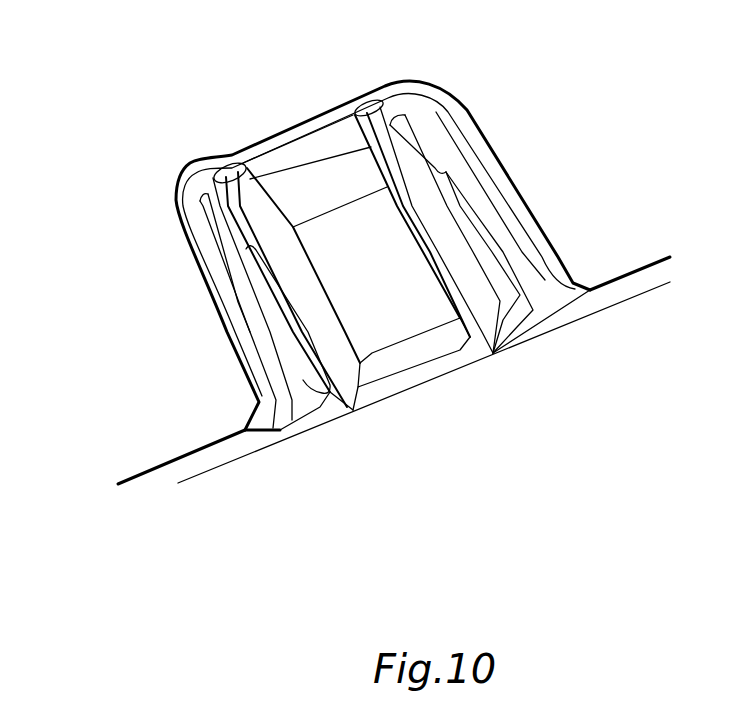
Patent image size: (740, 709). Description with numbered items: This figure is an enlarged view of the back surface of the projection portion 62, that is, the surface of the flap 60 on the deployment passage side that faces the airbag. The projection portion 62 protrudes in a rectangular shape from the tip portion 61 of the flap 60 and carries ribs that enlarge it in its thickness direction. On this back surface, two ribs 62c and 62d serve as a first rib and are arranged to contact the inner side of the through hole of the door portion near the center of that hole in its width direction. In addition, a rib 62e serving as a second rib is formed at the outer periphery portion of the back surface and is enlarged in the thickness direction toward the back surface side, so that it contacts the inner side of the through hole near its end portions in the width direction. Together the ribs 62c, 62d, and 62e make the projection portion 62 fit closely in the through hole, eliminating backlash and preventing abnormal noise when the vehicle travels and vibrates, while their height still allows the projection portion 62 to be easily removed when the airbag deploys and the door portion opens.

The flap 60 is at (362, 289).
The tip portion 61 is at (642, 263).
The projection portion 62 is at (325, 263).
The rib 62c is at (331, 395).
The rib 62d is at (493, 353).
The rib 62e is at (470, 154).